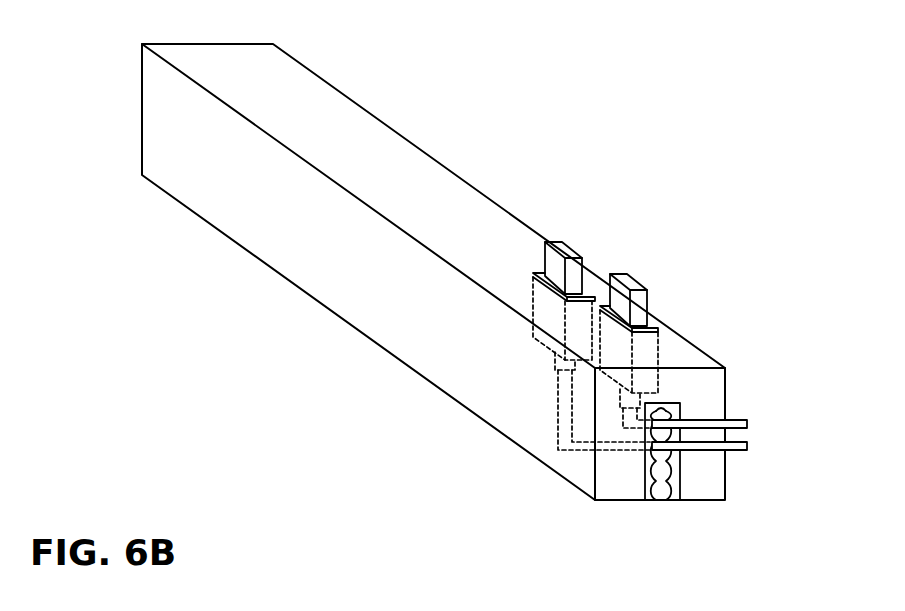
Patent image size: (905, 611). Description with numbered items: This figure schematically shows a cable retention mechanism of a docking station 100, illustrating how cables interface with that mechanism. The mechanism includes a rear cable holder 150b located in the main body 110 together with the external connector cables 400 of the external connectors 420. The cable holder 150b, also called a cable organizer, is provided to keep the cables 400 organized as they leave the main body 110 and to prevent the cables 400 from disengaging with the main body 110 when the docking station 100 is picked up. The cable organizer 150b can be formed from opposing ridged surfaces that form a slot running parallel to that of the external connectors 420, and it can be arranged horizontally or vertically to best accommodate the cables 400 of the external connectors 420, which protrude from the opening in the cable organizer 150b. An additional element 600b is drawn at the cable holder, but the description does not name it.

The docking station 100 is at (377, 265).
The main body 110 is at (387, 167).
The external connectors 420 is at (577, 252).
The external connector cables 400 is at (612, 425).
The rear cable holder 150b is at (645, 467).
The spring element 600b is at (668, 415).